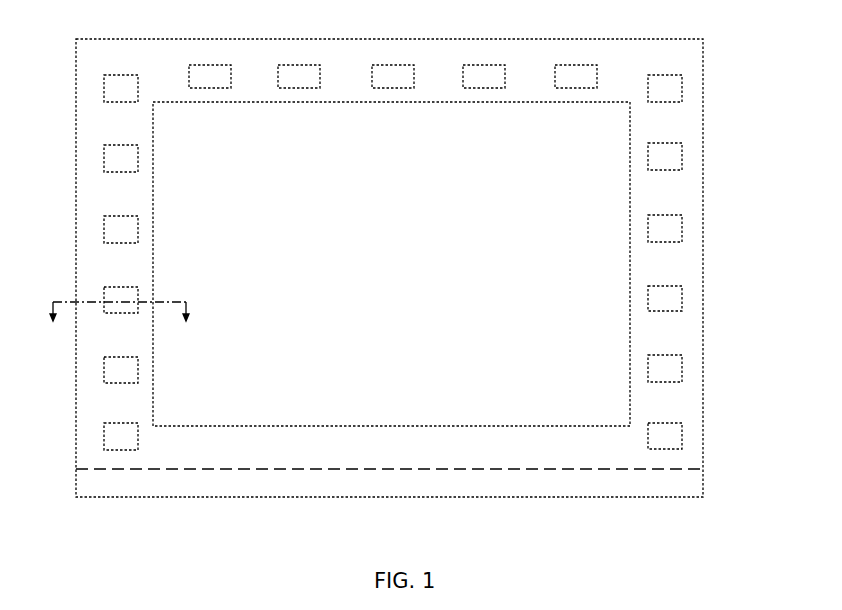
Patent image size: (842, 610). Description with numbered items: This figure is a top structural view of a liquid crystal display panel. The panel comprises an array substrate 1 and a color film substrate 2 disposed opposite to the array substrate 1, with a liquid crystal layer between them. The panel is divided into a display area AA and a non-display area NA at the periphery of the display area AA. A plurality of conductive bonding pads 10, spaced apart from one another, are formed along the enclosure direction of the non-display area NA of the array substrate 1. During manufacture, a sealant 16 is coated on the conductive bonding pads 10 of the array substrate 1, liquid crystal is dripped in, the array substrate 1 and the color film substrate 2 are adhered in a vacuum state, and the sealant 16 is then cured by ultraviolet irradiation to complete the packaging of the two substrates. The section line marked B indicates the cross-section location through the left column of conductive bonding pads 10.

The array substrate 1 is at (703, 92).
The sealant 16 is at (684, 132).
The conductive bonding pads 10 is at (287, 77).
The display area AA is at (630, 335).
The non-display area NA is at (684, 398).
The color film substrate 2 is at (300, 470).
The section line B- B is at (122, 324).